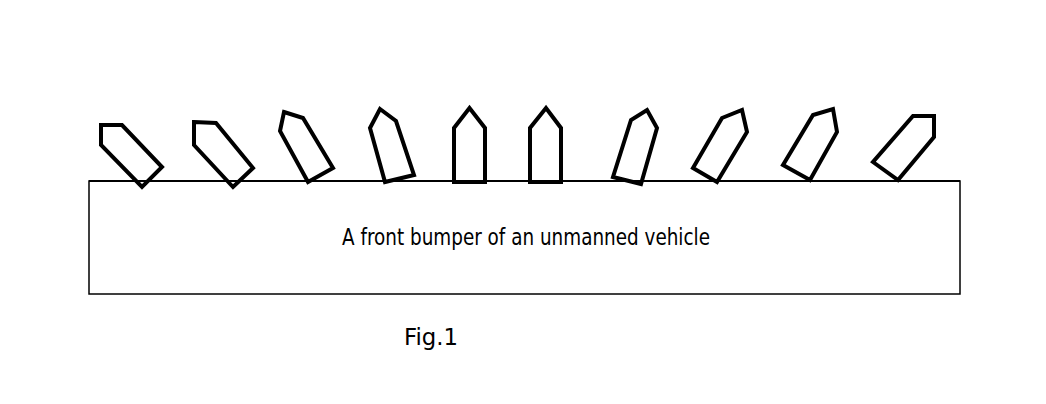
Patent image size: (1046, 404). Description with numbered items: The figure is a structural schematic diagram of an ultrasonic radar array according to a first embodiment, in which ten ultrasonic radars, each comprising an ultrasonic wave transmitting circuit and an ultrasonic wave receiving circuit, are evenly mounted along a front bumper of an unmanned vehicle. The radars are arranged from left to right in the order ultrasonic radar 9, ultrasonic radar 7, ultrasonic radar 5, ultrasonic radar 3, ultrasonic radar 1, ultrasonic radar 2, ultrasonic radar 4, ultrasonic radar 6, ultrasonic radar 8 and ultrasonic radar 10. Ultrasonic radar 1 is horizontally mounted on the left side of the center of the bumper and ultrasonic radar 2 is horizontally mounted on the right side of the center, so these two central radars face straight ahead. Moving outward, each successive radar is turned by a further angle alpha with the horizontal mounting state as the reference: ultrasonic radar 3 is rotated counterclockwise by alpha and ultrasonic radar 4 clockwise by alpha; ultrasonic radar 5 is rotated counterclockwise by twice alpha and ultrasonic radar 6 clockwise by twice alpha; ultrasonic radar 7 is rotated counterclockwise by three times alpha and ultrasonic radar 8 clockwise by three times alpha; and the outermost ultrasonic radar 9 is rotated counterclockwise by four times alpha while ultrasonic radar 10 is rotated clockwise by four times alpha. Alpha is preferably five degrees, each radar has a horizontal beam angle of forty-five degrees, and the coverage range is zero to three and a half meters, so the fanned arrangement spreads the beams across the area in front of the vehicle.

The ultrasonic radar 1 is at (470, 108).
The ultrasonic radar 2 is at (546, 108).
The ultrasonic radar 3 is at (380, 110).
The ultrasonic radar 4 is at (644, 110).
The ultrasonic radar 5 is at (287, 108).
The ultrasonic radar 6 is at (733, 108).
The ultrasonic radar 7 is at (197, 118).
The ultrasonic radar 8 is at (826, 105).
The ultrasonic radar 9 is at (106, 111).
The ultrasonic radar 10 is at (918, 100).